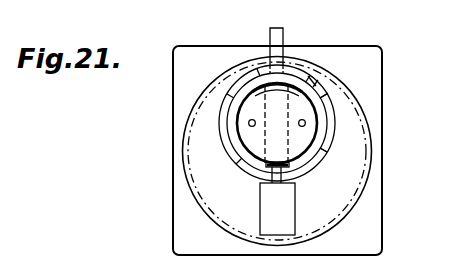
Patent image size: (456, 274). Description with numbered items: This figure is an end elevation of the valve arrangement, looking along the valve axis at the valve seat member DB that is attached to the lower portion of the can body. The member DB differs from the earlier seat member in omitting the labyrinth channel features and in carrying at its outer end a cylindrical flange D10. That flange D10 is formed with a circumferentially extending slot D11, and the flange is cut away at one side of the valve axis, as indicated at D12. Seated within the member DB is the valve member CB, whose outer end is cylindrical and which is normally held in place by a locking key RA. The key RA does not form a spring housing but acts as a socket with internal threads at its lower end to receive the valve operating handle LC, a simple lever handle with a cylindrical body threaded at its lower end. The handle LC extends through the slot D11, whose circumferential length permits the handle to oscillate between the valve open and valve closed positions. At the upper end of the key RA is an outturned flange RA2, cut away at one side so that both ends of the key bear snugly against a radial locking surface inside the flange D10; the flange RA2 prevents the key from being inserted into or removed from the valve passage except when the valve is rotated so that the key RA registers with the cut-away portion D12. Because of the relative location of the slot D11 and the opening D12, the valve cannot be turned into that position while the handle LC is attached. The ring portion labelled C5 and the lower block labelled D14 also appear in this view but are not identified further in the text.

The valve seat member DB is at (373, 71).
The bearing ring C5 is at (299, 125).
The locking key RA is at (248, 170).
The outturned flange RA2 is at (253, 85).
The valve member CB is at (249, 123).
The valve operating handle LC is at (272, 30).
The lower block D14 is at (283, 187).
The circumferentially extending slot D11 is at (312, 86).
The cylindrical flange D10 is at (323, 100).
The cut away portion D12 is at (315, 155).